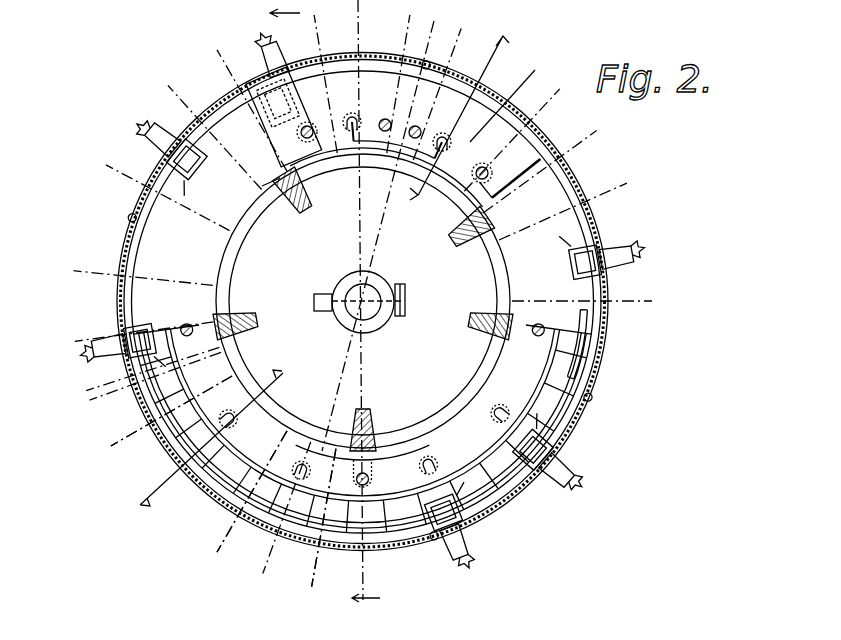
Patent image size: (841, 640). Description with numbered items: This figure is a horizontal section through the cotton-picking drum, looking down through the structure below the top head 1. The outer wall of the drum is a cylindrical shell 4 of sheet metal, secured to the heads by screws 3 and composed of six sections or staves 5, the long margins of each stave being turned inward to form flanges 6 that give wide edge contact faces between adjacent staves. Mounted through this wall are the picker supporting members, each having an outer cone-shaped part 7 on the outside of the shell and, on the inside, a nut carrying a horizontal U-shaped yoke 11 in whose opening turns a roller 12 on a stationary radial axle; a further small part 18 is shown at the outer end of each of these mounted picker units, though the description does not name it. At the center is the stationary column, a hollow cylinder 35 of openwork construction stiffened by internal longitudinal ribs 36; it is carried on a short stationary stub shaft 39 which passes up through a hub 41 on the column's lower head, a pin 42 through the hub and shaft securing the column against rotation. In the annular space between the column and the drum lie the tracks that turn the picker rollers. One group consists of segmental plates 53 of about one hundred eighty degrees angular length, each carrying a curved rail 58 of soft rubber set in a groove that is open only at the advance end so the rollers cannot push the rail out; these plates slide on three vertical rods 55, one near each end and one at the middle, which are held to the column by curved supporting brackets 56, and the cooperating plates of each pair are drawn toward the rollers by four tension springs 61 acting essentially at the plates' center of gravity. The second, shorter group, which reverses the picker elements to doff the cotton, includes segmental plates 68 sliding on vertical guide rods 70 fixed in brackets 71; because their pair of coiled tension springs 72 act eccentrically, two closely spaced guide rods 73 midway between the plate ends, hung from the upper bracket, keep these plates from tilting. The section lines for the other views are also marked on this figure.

The top head 1 is at (325, 313).
The screws 3 is at (275, 208).
The cylindrical shell 4 is at (200, 448).
The sections or staves 5 is at (170, 262).
The flanges 6 is at (430, 62).
The outer cone-shaped part 7 is at (262, 54).
The U-shaped extension or yoke 11 is at (190, 192).
The roller 12 is at (210, 140).
The hook 18 is at (284, 50).
The hollow cylinder 35 is at (242, 253).
The internal longitudinal ribs 36 is at (488, 316).
The stub shaft 39 is at (366, 285).
The hub 41 is at (374, 326).
The pin 42 is at (402, 290).
The segmental plates 53 is at (178, 292).
The vertical rods 55 is at (188, 336).
The supporting brackets 56 is at (226, 305).
The curved rails 58 is at (140, 400).
The tension springs 61 is at (225, 410).
The segmental plates 68 is at (510, 98).
The vertical guide rods 70 is at (298, 133).
The brackets 71 is at (380, 166).
The coiled tension springs 72 is at (352, 112).
The guide rods 73 is at (414, 126).